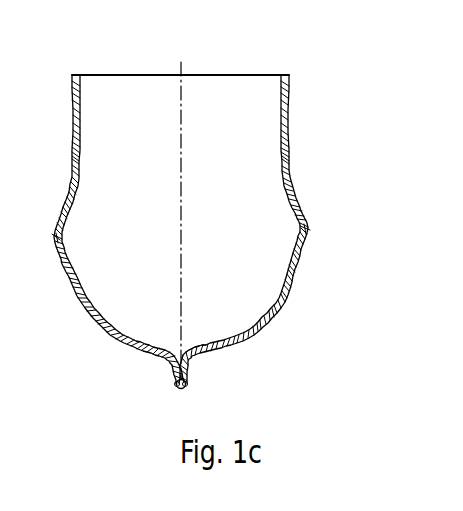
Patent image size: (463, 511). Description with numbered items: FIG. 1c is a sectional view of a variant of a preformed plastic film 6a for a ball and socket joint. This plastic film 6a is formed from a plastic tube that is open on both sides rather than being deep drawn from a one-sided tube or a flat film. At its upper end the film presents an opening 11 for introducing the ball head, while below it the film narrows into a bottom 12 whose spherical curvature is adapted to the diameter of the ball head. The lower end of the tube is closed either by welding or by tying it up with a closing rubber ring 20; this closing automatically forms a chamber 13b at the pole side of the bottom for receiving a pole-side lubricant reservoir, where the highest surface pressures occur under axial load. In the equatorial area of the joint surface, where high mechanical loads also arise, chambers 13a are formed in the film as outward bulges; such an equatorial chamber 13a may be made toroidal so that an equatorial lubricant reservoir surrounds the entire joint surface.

The opening 11 is at (218, 74).
The plastic film 6a is at (289, 121).
The bottom 12 is at (105, 318).
The equatorial chamber 13a is at (55, 237).
The chamber 13b is at (194, 362).
The rubber ring 20 is at (176, 383).